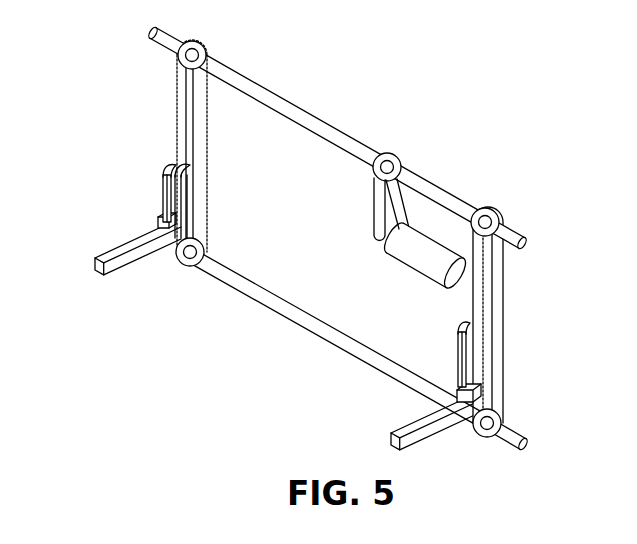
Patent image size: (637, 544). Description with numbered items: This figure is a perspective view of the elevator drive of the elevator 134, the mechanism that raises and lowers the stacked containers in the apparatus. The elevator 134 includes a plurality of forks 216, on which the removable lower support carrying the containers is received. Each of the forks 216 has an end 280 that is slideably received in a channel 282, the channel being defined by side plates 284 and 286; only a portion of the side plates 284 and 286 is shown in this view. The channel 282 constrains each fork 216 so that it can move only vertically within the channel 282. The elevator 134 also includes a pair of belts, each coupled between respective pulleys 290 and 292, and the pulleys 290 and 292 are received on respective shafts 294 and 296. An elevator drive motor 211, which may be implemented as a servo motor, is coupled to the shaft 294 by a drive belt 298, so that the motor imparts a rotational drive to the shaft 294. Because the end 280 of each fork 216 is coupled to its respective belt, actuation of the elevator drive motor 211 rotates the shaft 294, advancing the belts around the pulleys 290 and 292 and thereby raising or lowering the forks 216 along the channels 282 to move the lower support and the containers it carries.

The elevator 134 is at (104, 86).
The pulley 290 is at (204, 41).
The pulley 292 is at (204, 248).
The shaft 294 is at (512, 228).
The shaft 296 is at (517, 426).
The drive belt 298 is at (373, 199).
The elevator drive motor 211 is at (425, 258).
The side plate 286 is at (165, 171).
The channel 282 is at (160, 197).
The side plate 284 is at (182, 182).
The end 280 is at (162, 220).
The fork 216 is at (100, 260).